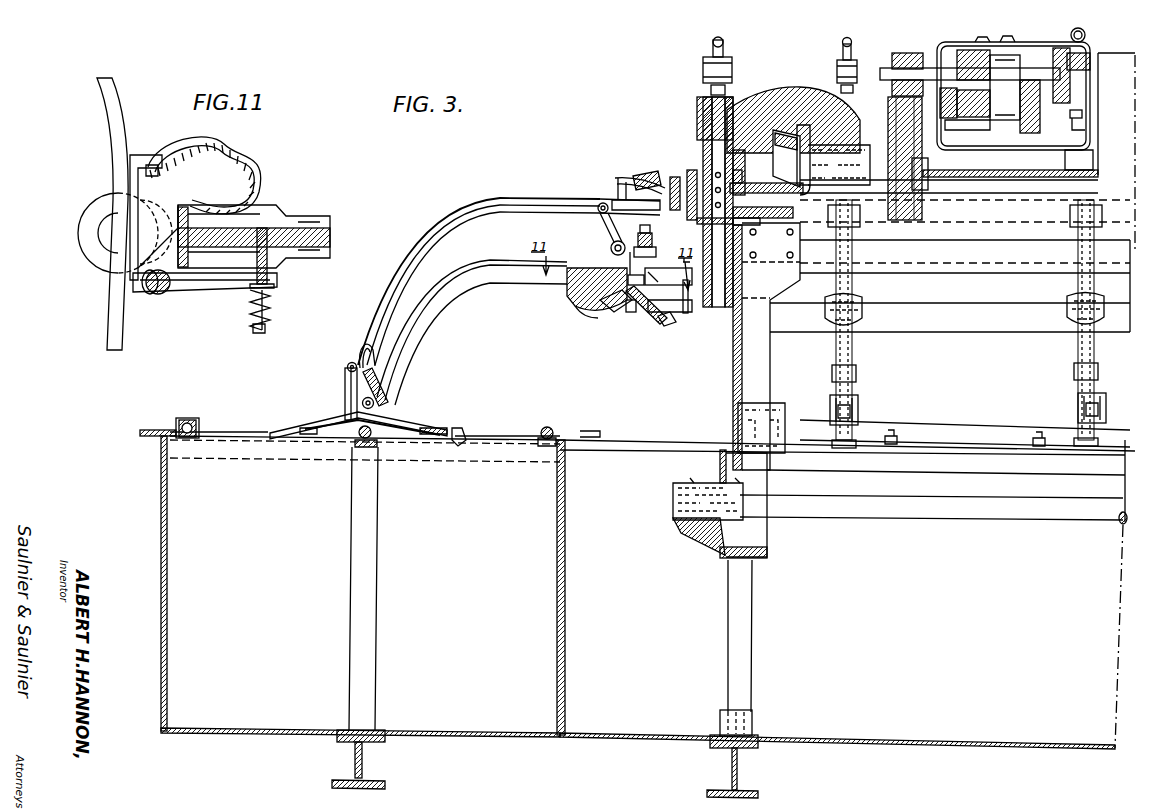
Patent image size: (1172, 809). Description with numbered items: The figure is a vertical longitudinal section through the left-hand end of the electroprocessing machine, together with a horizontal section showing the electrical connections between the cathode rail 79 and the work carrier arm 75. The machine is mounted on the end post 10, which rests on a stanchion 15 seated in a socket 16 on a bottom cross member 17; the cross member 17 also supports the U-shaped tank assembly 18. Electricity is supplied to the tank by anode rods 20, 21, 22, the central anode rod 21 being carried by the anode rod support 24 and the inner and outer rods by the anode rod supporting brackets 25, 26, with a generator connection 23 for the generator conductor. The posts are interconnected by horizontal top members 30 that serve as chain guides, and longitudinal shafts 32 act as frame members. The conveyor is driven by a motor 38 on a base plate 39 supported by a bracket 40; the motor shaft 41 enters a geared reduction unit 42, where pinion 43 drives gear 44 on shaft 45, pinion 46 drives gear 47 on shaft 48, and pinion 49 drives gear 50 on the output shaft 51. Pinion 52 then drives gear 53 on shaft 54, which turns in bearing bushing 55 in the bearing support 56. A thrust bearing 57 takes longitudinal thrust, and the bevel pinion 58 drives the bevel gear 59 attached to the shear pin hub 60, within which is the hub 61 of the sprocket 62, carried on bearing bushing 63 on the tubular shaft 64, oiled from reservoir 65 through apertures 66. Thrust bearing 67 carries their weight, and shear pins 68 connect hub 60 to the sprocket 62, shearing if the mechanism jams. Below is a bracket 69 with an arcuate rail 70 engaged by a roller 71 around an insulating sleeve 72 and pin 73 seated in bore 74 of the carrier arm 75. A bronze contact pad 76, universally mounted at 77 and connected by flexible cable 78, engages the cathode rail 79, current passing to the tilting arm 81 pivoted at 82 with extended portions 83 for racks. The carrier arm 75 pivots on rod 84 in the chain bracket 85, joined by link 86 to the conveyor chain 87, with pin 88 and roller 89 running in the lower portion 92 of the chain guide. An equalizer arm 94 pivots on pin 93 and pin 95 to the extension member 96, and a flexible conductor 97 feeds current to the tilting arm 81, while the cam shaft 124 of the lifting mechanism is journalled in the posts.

In FIG. 3, the end post 10 is at (734, 392).
In FIG. 3, the stanchion 15 is at (747, 652).
In FIG. 3, the socket 16 is at (757, 716).
In FIG. 3, the bottom cross member 17 is at (758, 795).
In FIG. 3, the tank assembly 18 is at (160, 540).
In FIG. 3, the inner anode rod 20 is at (548, 430).
In FIG. 3, the central anode rod 21 is at (356, 440).
In FIG. 3, the outer anode rod 22 is at (192, 420).
In FIG. 3, the generator connection 23 is at (180, 424).
In FIG. 3, the anode rod support 24 is at (354, 496).
In FIG. 3, the anode rod supporting bracket 25 is at (590, 425).
In FIG. 3, the anode rod supporting bracket 26 is at (152, 430).
In FIG. 3, the horizontal top member 30 is at (1130, 222).
In FIG. 3, the longitudinal shaft 32 is at (1003, 414).
In FIG. 3, the motor 38 is at (1136, 98).
In FIG. 3, the base plate 39 is at (1048, 202).
In FIG. 3, the bracket 40 is at (1090, 193).
In FIG. 3, the motor shaft 41 is at (1082, 114).
In FIG. 3, the geared reduction unit 42 is at (1002, 43).
In FIG. 3, the pinion 43 is at (1084, 132).
In FIG. 3, the gear 44 is at (1088, 66).
In FIG. 3, the shaft 45 is at (1071, 40).
In FIG. 3, the pinion 46 is at (1052, 72).
In FIG. 3, the gear 47 is at (1030, 134).
In FIG. 3, the shaft 48 is at (1008, 120).
In FIG. 3, the pinion 49 is at (965, 130).
In FIG. 3, the gear 50 is at (968, 50).
In FIG. 3, the output shaft 51 is at (935, 68).
In FIG. 3, the pinion 52 is at (900, 53).
In FIG. 3, the gear 53 is at (888, 105).
In FIG. 3, the shaft 54 is at (920, 180).
In FIG. 3, the bearing bushing 55 is at (828, 92).
In FIG. 3, the bearing support 56 is at (841, 170).
In FIG. 3, the thrust bearing 57 is at (804, 110).
In FIG. 3, the bevel pinion 58 is at (790, 110).
In FIG. 3, the bevel gear 59 is at (642, 174).
In FIG. 3, the shear pin hub 60 is at (674, 177).
In FIG. 3, the hub 61 is at (708, 165).
In FIG. 3, the sprocket 62 is at (618, 196).
In FIG. 3, the bearing bushing 63 is at (704, 155).
In FIG. 3, the tubular shaft 64 is at (726, 145).
In FIG. 3, the oiling reservoir 65 is at (710, 50).
In FIG. 3, the aperture 66 is at (727, 165).
In FIG. 3, the thrust bearing 67 is at (698, 221).
In FIG. 3, the shear pin 68 is at (690, 170).
In FIG. 3, the bracket 69 is at (688, 256).
In FIG. 3, the arcuate rail 70 is at (675, 312).
In FIG. 11, the roller 71 is at (86, 233).
In FIG. 3, the roller 71 is at (632, 312).
In FIG. 3, the insulating sleeve 72 is at (642, 320).
In FIG. 3, the pin 73 is at (664, 326).
In FIG. 3, the bore 74 is at (614, 312).
In FIG. 11, the carrier arm 75 is at (306, 220).
In FIG. 3, the carrier arm 75 is at (510, 288).
In FIG. 11, the bronze contact pad 76 is at (132, 173).
In FIG. 3, the bronze contact pad 76 is at (588, 312).
In FIG. 11, the universal mounting 77 is at (160, 295).
In FIG. 3, the universal mounting 77 is at (600, 270).
In FIG. 11, the flexible cable 78 is at (250, 172).
In FIG. 3, the flexible cable 78 is at (618, 262).
In FIG. 11, the cathode rail 79 is at (118, 128).
In FIG. 3, the cathode rail 79 is at (688, 312).
In FIG. 3, the tilting arm 81 is at (405, 424).
In FIG. 3, the pivot 82 is at (374, 404).
In FIG. 3, the extended portion 83 is at (462, 436).
In FIG. 3, the rod 84 is at (611, 244).
In FIG. 3, the chain bracket 85 is at (602, 216).
In FIG. 3, the link 86 is at (602, 203).
In FIG. 3, the conveyor chain 87 is at (616, 178).
In FIG. 3, the pin 88 is at (650, 244).
In FIG. 3, the roller 89 is at (636, 262).
In FIG. 3, the lower portion 92 is at (1012, 275).
In FIG. 3, the pin 93 is at (590, 200).
In FIG. 3, the equalizer arm 94 is at (398, 243).
In FIG. 3, the pin 95 is at (347, 366).
In FIG. 3, the extension member 96 is at (345, 396).
In FIG. 3, the flexible conductor 97 is at (360, 348).
In FIG. 3, the cam shaft 124 is at (960, 515).